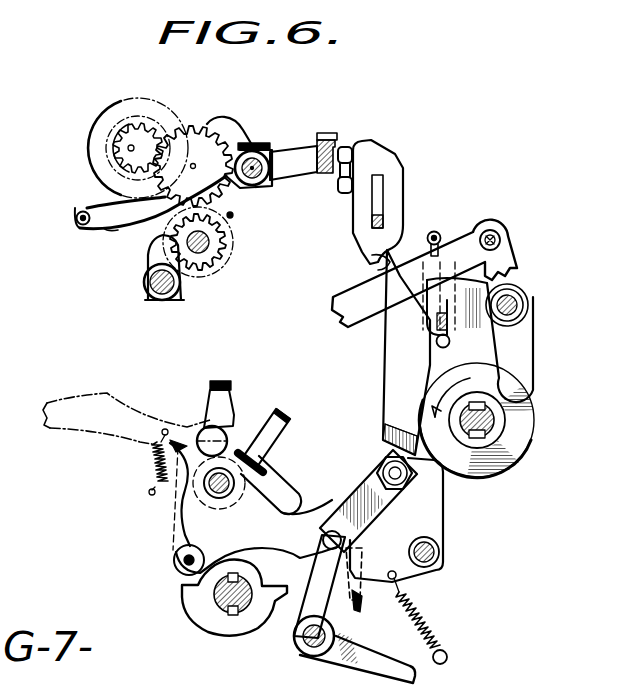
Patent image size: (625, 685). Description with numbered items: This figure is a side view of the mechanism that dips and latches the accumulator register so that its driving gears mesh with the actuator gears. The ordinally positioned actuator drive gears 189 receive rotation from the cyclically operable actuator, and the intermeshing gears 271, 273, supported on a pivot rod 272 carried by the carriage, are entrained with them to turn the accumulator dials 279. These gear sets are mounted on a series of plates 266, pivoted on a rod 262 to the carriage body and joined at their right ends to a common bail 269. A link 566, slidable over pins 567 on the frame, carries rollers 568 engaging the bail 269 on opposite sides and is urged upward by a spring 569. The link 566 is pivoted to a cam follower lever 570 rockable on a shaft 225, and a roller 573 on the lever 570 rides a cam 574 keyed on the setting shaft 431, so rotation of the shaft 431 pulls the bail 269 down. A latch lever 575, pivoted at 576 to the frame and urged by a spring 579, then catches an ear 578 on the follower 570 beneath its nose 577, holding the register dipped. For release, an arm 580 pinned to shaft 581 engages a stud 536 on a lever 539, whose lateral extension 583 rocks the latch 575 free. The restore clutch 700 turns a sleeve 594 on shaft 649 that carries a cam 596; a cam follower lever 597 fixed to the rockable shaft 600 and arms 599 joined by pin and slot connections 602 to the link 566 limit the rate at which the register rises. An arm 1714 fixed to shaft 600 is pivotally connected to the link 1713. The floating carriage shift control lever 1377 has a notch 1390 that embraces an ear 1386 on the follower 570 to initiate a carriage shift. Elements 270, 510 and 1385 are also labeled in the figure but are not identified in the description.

The actuator drive gears 189 is at (222, 227).
The shaft 225 is at (222, 470).
The rod 262 is at (77, 222).
The plates 266 is at (97, 187).
The bail 269 is at (330, 138).
The center pin 270 is at (130, 147).
The accumulator drive gears 271 is at (110, 224).
The pivot rod 272 is at (190, 168).
The intermeshing gears 273 is at (137, 170).
The accumulator dials 279 is at (88, 152).
The setting shaft 431 is at (222, 606).
The spring 510 is at (143, 475).
The stud 536 is at (333, 530).
The levers 539 is at (312, 586).
The links 566 is at (386, 357).
The pins 567 is at (382, 222).
The rollers 568 is at (352, 148).
The spring 569 is at (452, 238).
The cam follower levers 570 is at (287, 503).
The rollers 573 is at (172, 533).
The cams 574 is at (183, 600).
The latch levers 575 is at (410, 485).
The pivot 576 is at (440, 555).
The noses 577 is at (416, 482).
The ears 578 is at (400, 445).
The springs 579 is at (430, 619).
The arm 580 is at (350, 544).
The shaft 581 is at (321, 658).
The lateral extensions 583 is at (357, 580).
The sleeve 594 is at (500, 405).
The cam 596 is at (520, 440).
The cam follower lever 597 is at (535, 368).
The arms 599 is at (448, 330).
The rockable shaft 600 is at (530, 305).
The pin and slot connections 602 is at (377, 263).
The shaft 649 is at (492, 421).
The restore clutch 700 is at (528, 396).
The floating carriage shift control lever 1377 is at (110, 432).
The link 1385 is at (210, 388).
The ear 1386 is at (222, 382).
The notch 1390 is at (232, 400).
The link 1713 is at (340, 316).
The arm 1714 is at (513, 250).